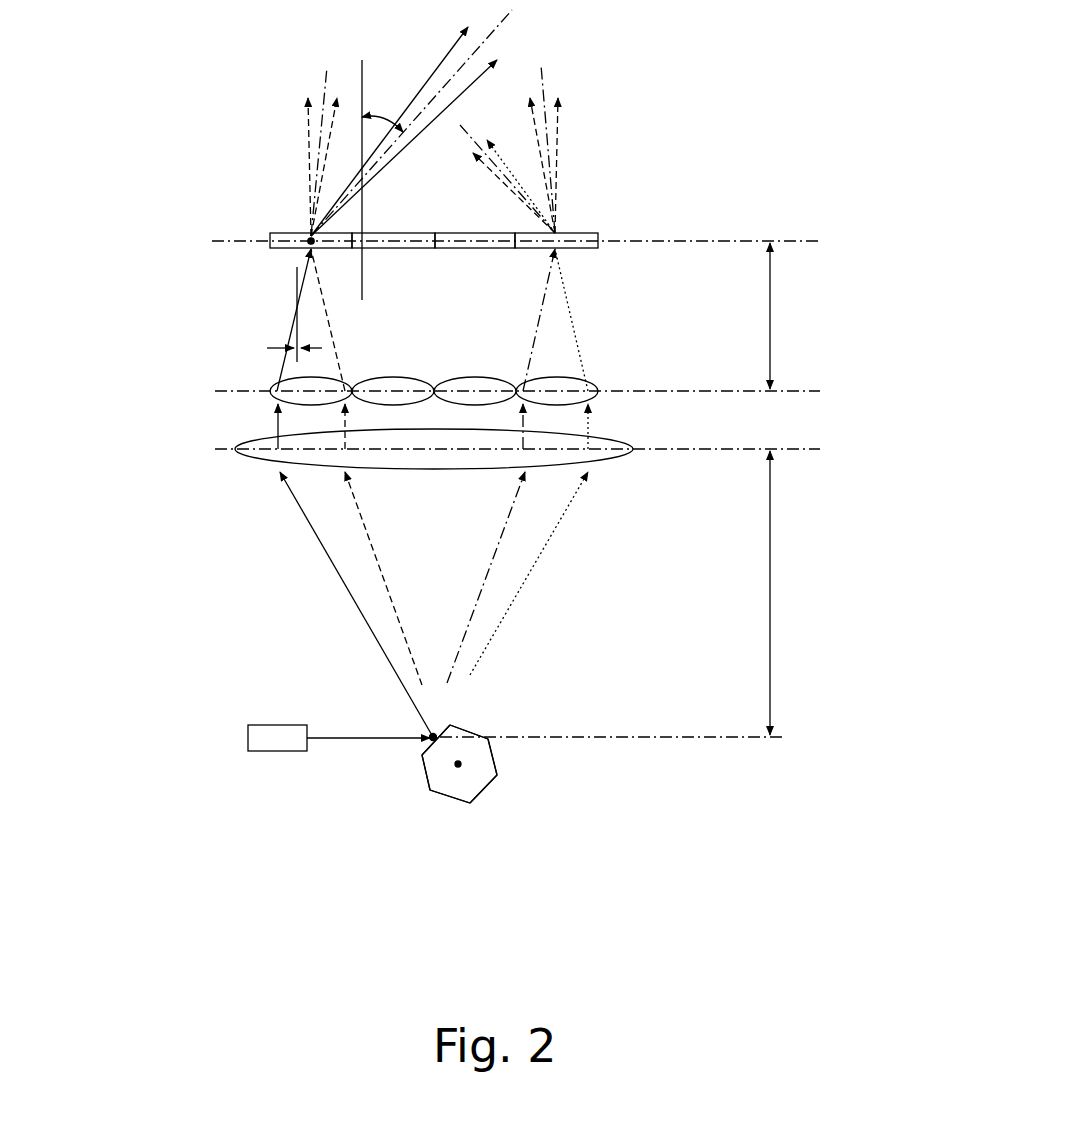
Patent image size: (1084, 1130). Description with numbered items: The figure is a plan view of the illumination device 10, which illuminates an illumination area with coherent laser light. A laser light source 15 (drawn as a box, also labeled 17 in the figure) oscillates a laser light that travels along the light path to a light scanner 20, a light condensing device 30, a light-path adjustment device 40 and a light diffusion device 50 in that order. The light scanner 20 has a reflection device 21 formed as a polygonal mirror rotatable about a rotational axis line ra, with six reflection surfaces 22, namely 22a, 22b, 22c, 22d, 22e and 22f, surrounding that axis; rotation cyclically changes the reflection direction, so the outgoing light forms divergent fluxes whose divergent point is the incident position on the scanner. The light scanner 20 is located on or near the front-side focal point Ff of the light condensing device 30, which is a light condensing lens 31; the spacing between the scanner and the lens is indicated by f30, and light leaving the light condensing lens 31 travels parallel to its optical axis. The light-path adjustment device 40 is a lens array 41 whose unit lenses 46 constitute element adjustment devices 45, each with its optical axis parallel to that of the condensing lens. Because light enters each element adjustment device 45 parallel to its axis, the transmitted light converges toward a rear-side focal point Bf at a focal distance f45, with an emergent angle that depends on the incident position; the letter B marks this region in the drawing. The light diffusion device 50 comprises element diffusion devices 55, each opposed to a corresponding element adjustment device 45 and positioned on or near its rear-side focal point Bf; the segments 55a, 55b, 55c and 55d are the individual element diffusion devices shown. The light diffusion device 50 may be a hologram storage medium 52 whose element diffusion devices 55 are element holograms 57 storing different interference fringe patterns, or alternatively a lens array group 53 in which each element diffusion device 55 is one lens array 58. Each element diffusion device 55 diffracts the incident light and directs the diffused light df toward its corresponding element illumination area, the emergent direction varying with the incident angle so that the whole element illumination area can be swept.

The illumination device 10 is at (484, 480).
The laser light source 15 is at (262, 745).
The laser 17 is at (329, 774).
The light scanner 20 is at (473, 819).
The reflection device 21 is at (473, 819).
The reflection surfaces 22 is at (473, 819).
The reflection surface 22a is at (421, 748).
The reflection surface 22b is at (421, 776).
The reflection surface 22c is at (448, 803).
The reflection surface 22d is at (486, 789).
The reflection surface 22e is at (493, 752).
The reflection surface 22f is at (474, 727).
The light condensing device 30 is at (467, 491).
The light condensing lens 31 is at (632, 470).
The light-path adjustment device 40 is at (501, 360).
The lens array 41 is at (501, 360).
The element adjustment device 45 is at (434, 363).
The unit lens 46 is at (468, 386).
The light diffusion device 50 is at (448, 230).
The hologram storage medium 52 is at (448, 230).
The lens array group 53 is at (448, 230).
The element diffusion device 55 is at (446, 271).
The segment a 55a is at (272, 249).
The segment b 55b is at (382, 249).
The segment c 55c is at (447, 249).
The segment d 55d is at (575, 248).
The element hologram 57 is at (446, 271).
The lens array 58 is at (446, 271).
The front-side focal point Ff is at (438, 733).
The rear-side focal point Bf is at (311, 238).
The rotational axis line ra is at (460, 766).
The diffused light df is at (313, 133).
The beam B is at (297, 267).
The focal length of lens 30 f30 is at (790, 593).
The focal distance f45 is at (790, 316).